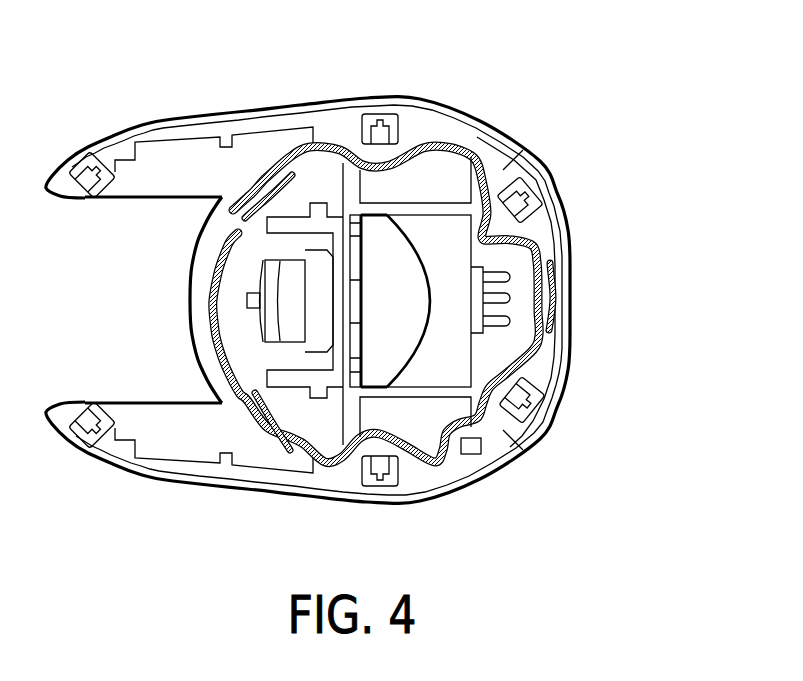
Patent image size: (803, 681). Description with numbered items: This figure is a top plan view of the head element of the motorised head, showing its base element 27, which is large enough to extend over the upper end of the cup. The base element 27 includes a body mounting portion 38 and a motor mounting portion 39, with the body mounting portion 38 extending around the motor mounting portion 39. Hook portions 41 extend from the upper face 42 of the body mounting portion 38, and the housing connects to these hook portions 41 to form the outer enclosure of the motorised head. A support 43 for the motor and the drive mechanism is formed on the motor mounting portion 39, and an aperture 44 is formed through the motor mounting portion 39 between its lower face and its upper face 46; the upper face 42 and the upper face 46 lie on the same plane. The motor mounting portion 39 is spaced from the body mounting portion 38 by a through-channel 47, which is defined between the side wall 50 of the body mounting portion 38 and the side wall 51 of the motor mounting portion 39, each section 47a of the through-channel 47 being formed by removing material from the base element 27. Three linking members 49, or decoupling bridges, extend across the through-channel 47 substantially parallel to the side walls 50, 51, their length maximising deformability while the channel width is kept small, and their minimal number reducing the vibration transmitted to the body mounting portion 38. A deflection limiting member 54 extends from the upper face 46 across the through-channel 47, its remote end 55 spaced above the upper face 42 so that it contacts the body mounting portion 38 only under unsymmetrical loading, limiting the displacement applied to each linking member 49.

The base element 27 is at (632, 75).
The body mounting portion 38 is at (480, 124).
The motor mounting portion 39 is at (236, 300).
The hook portions 41 is at (381, 126).
The upper face 42 is at (523, 150).
The support 43 is at (335, 287).
The aperture 44 is at (377, 309).
The upper face 46 is at (397, 413).
The through-channel 47 is at (486, 430).
The section of the through-channel 47a is at (473, 145).
The linking members 49 is at (267, 175).
The side wall 50 is at (335, 146).
The side wall 51 is at (355, 148).
The deflection limiting member 54 is at (352, 418).
The remote end 55 is at (353, 454).